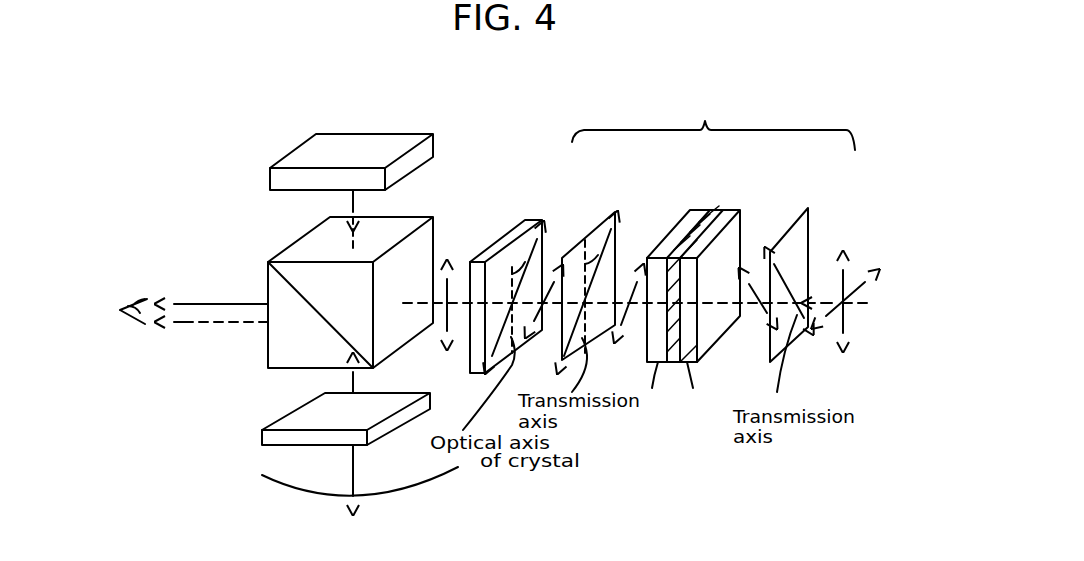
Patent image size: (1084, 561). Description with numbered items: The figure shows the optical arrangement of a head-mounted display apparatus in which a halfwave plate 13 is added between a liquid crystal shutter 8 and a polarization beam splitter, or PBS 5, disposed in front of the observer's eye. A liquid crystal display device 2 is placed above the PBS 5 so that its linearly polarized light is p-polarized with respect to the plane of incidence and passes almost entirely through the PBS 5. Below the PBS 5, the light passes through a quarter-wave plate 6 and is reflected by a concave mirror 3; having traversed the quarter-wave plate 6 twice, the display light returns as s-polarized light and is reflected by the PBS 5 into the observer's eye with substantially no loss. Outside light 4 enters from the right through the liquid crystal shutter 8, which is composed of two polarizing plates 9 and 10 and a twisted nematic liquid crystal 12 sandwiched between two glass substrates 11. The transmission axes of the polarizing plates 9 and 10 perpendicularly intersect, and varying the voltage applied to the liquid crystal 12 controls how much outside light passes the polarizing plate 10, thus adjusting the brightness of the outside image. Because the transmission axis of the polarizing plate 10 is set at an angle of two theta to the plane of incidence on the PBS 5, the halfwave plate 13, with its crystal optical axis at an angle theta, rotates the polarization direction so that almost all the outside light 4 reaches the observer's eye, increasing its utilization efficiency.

The liquid crystal display device 2 is at (323, 147).
The concave mirror 3 is at (275, 475).
The outside light 4 is at (833, 317).
The polarization beam splitter (PBS) 5 is at (282, 262).
The quarter-wave plate 6 is at (287, 415).
The liquid crystal shutter 8 is at (719, 119).
The polarizing plate 9 is at (810, 227).
The polarizing plate 10 is at (600, 230).
The glass substrates 11 is at (673, 388).
The liquid crystal 12 is at (702, 275).
The halfwave plate 13 is at (495, 240).